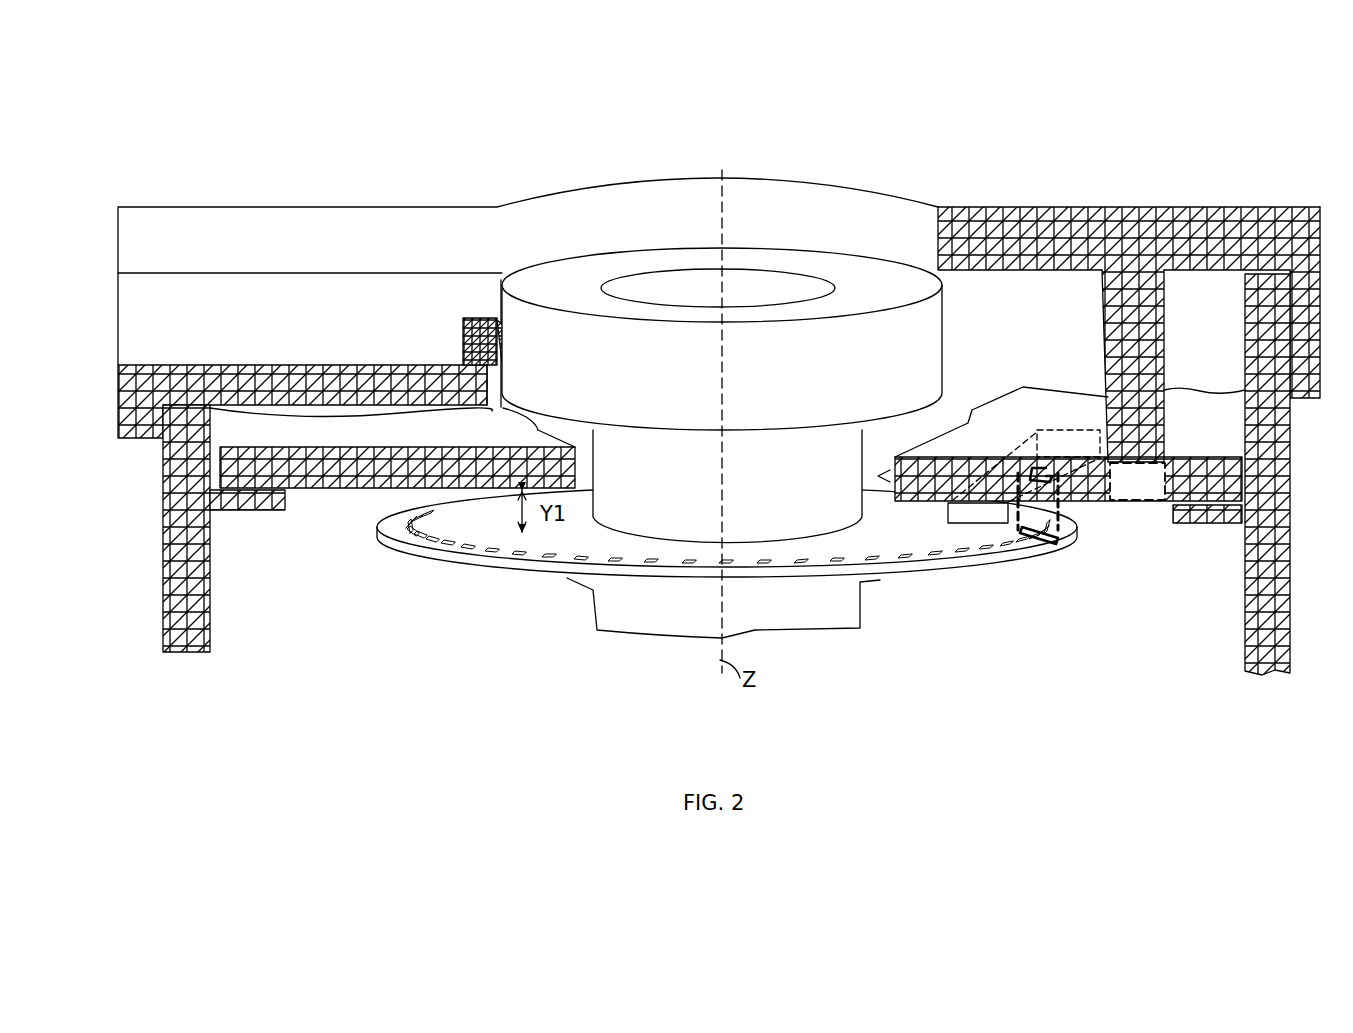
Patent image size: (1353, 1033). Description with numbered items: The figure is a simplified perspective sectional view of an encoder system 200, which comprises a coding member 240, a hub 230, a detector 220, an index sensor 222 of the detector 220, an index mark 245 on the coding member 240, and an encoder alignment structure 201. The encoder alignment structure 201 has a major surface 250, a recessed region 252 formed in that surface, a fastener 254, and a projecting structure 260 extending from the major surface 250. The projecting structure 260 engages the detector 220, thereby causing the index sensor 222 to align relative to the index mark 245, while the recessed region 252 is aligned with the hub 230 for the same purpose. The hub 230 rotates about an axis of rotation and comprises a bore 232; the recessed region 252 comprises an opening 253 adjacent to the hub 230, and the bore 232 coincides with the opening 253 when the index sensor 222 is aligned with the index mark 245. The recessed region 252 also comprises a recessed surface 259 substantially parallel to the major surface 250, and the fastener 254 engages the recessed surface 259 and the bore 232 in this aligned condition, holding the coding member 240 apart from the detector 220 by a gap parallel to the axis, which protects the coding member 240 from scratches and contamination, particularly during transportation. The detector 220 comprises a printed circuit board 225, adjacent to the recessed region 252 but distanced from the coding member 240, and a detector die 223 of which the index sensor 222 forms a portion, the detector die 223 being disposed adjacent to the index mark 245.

The encoder system 200 is at (127, 140).
The encoder alignment structure 201 is at (1239, 192).
The detector 220 is at (1194, 401).
The index sensor 222 is at (1046, 462).
The detector die 223 is at (947, 512).
The printed circuit board 225 is at (342, 447).
The hub 230 is at (762, 444).
The bore 232 is at (541, 350).
The coding member 240 is at (906, 568).
The index mark 245 is at (1063, 538).
The major surface 250 is at (977, 272).
The recessed region 252 is at (203, 320).
The opening 253 is at (484, 286).
The fastener 254 is at (462, 330).
The recessed surface 259 is at (386, 363).
The projecting structure 260 is at (1102, 302).